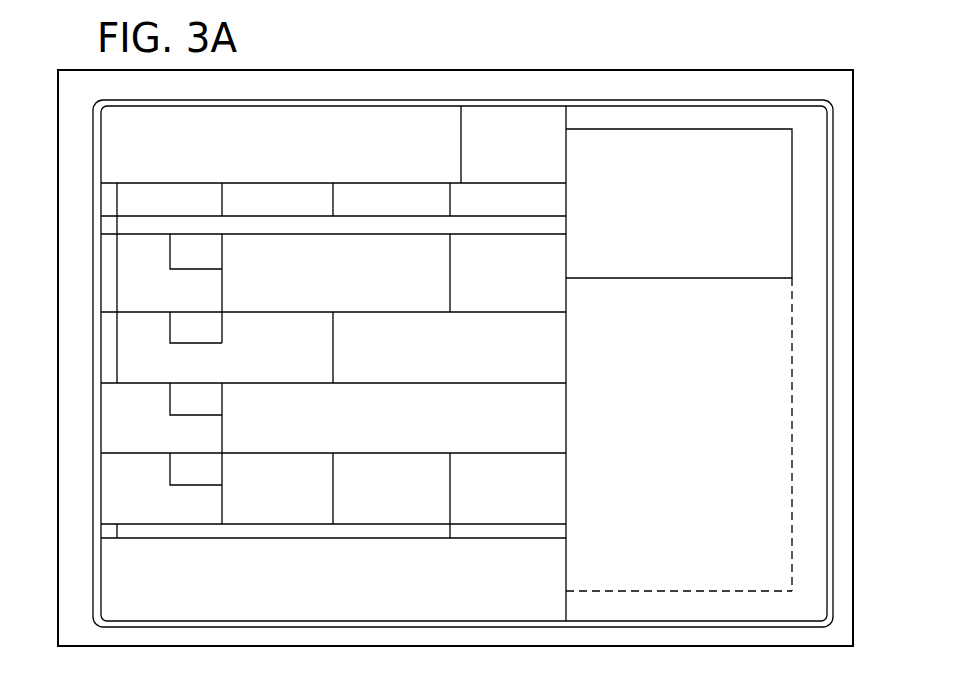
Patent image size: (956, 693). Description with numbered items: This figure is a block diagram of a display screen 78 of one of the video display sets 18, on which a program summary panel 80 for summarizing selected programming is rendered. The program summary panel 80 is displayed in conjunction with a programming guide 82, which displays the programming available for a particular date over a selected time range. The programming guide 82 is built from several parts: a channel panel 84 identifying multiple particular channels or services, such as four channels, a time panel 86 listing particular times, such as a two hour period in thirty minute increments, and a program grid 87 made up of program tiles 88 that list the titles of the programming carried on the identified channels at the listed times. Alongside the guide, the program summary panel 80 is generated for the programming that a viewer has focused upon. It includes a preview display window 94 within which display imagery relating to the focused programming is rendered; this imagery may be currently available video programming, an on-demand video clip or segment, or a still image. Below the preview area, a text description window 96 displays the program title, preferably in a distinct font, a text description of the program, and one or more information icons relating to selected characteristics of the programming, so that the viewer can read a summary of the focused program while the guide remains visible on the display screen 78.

The video display set 18 is at (754, 82).
The display screen 78 is at (508, 104).
The program summary panel 80 is at (793, 208).
The programming guide 82 is at (137, 253).
The channel panel 84 is at (178, 252).
The time panel 86 is at (251, 183).
The program grid 87 is at (415, 500).
The program tiles 88 is at (333, 386).
The preview display window 94 is at (679, 203).
The text description window 96 is at (679, 434).